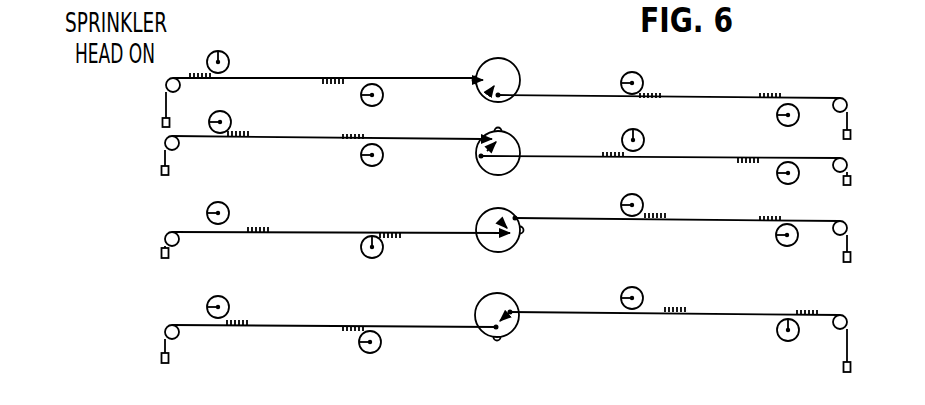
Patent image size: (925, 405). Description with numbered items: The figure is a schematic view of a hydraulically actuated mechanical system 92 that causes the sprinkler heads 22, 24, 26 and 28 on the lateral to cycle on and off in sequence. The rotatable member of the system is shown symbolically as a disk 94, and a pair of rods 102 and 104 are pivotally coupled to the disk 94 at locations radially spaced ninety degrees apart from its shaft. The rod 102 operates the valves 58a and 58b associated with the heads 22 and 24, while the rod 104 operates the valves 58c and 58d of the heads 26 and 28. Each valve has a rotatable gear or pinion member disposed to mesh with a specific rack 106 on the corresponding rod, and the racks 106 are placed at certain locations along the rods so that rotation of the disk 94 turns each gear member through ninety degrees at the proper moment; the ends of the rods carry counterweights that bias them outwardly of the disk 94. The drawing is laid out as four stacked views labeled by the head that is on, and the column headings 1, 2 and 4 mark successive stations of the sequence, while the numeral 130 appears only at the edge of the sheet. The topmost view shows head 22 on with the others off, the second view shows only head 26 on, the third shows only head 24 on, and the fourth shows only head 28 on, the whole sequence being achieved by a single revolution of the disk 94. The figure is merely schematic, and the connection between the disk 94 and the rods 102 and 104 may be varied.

The station 1 is at (226, 44).
The station 2 is at (386, 46).
The station 4 is at (797, 50).
The sprinkler head 22 is at (473, 108).
The sprinkler head 24 is at (473, 239).
The sprinkler head 26 is at (473, 154).
The sprinkler head 28 is at (473, 341).
The valve 58a is at (227, 53).
The valve 58b is at (381, 102).
The valve 58c is at (643, 82).
The valve 58d is at (784, 127).
The hydraulically actuated mechanical system 92 is at (549, 82).
The disk 94 is at (503, 59).
The rod 102 is at (295, 78).
The rod 104 is at (589, 97).
The rack 106 is at (192, 72).
The pipe section 130 is at (286, 398).